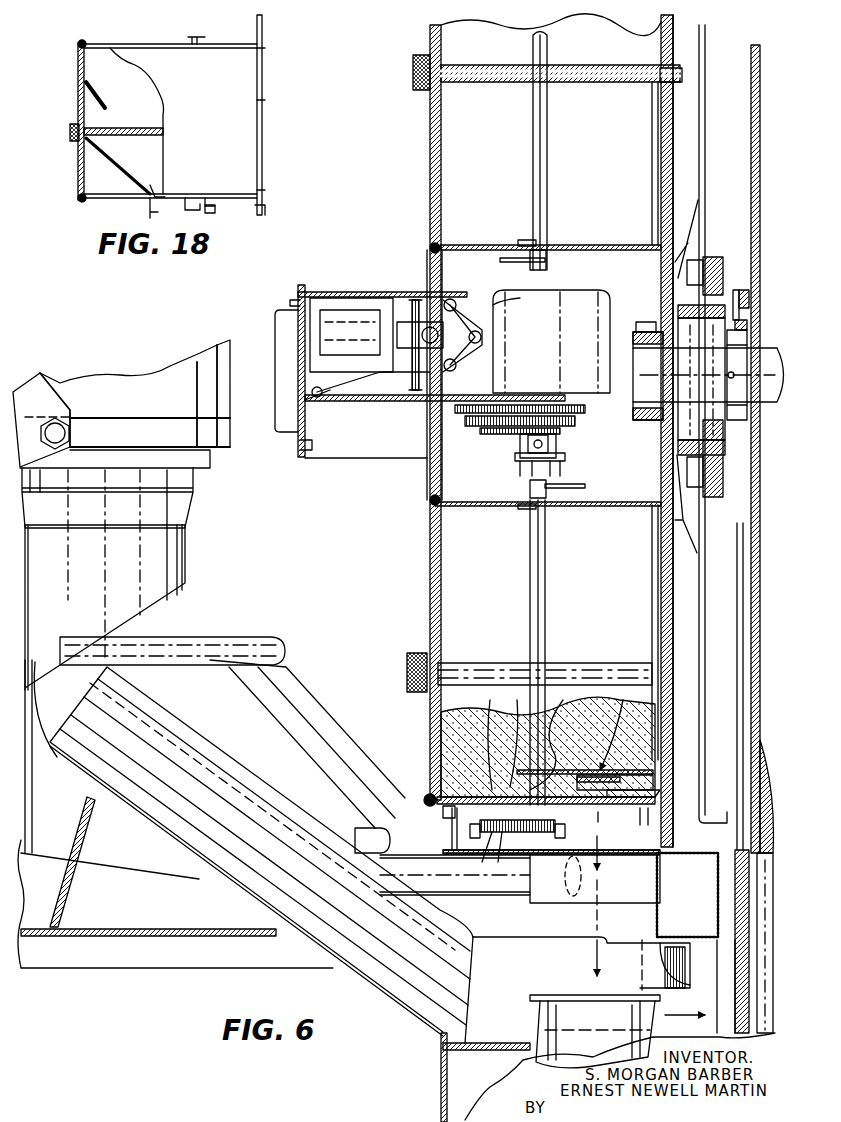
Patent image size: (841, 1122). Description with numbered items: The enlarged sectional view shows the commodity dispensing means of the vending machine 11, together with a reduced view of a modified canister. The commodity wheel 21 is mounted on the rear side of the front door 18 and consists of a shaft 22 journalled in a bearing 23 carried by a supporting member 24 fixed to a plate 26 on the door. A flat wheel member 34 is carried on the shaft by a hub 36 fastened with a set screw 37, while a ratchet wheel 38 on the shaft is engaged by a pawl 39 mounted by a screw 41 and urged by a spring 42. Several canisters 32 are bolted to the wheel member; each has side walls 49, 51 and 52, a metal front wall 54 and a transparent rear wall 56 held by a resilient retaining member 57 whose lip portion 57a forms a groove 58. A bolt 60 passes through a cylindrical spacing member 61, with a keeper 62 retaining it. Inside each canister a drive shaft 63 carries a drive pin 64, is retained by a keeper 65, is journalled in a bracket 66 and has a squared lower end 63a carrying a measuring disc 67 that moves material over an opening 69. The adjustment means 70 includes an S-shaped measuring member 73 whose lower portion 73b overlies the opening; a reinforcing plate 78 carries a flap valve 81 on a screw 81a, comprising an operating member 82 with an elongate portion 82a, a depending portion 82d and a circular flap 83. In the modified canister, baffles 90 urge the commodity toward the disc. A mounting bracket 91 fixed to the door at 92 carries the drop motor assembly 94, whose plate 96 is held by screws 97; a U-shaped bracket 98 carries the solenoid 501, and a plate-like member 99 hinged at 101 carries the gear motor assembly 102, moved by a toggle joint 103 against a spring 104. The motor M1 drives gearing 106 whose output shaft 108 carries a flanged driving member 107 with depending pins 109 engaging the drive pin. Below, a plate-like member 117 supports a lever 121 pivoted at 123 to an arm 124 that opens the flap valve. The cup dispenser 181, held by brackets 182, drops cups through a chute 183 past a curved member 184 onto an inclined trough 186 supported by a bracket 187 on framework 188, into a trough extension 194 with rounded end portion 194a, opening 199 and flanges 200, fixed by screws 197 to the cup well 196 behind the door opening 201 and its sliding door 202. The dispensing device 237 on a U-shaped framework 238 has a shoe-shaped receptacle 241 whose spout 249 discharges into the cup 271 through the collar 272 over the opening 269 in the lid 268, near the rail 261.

In FIG. 6, the apparatus 11 is at (778, 75).
In FIG. 6, the front door 18 is at (762, 162).
In FIG. 6, the commodity wheel 21 is at (428, 148).
In FIG. 6, the shaft 22 is at (770, 357).
In FIG. 6, the bearing 23 is at (701, 380).
In FIG. 6, the supporting member 24 is at (728, 432).
In FIG. 6, the plate 26 is at (707, 162).
In FIG. 18, the canister 32 is at (170, 122).
In FIG. 18, the wheel member 34 is at (262, 122).
In FIG. 6, the wheel member 34 is at (675, 118).
In FIG. 6, the hub 36 is at (646, 420).
In FIG. 6, the set screw 37 is at (660, 330).
In FIG. 6, the ratchet wheel 38 is at (748, 410).
In FIG. 6, the pawl 39 is at (748, 325).
In FIG. 6, the screw 41 is at (742, 300).
In FIG. 6, the spring 42 is at (740, 290).
In FIG. 6, the side wall 49 is at (615, 245).
In FIG. 6, the side wall 51 is at (545, 162).
In FIG. 6, the side wall 52 is at (443, 826).
In FIG. 6, the front wall 54 is at (660, 167).
In FIG. 18, the rear wall 56 is at (78, 98).
In FIG. 6, the rear wall 56 is at (430, 178).
In FIG. 18, the retaining member 57 is at (78, 200).
In FIG. 6, the retaining member 57 is at (430, 250).
In FIG. 6, the lip portion 57a is at (428, 790).
In FIG. 6, the groove 58 is at (424, 800).
In FIG. 18, the bolt 60 is at (70, 134).
In FIG. 6, the bolt 60 is at (413, 72).
In FIG. 18, the cylindrical spacing member 61 is at (150, 120).
In FIG. 6, the cylindrical spacing member 61 is at (525, 65).
In FIG. 6, the keeper 62 is at (662, 64).
In FIG. 6, the drive shaft 63 is at (547, 204).
In FIG. 6, the squared lower end 63a is at (511, 738).
In FIG. 6, the drive pin 64 is at (505, 262).
In FIG. 6, the keeper 65 is at (525, 240).
In FIG. 6, the bracket 66 is at (549, 737).
In FIG. 18, the measuring disc 67 is at (153, 192).
In FIG. 6, the measuring disc 67 is at (480, 740).
In FIG. 6, the opening 69 is at (604, 822).
In FIG. 6, the adjustment means 70 is at (623, 700).
In FIG. 6, the S-shaped measuring member 73 is at (653, 780).
In FIG. 6, the lower portion 73b is at (620, 790).
In FIG. 6, the reinforcing plate 78 is at (650, 806).
In FIG. 18, the flap valve 81 is at (213, 214).
In FIG. 6, the flap valve 81 is at (602, 860).
In FIG. 6, the screw 81a is at (565, 862).
In FIG. 6, the operating member 82 is at (478, 838).
In FIG. 6, the elongate portion 82a is at (565, 832).
In FIG. 6, the depending portion 82d is at (452, 840).
In FIG. 6, the circular flap 83 is at (645, 825).
In FIG. 18, the baffles 90 is at (92, 92).
In FIG. 6, the mounting bracket 91 is at (362, 458).
In FIG. 6, the end fixing point 92 is at (695, 512).
In FIG. 6, the drop motor assembly 94 is at (372, 270).
In FIG. 6, the plate 96 is at (305, 425).
In FIG. 6, the screws 97 is at (298, 300).
In FIG. 6, the U-shaped bracket 98 is at (411, 300).
In FIG. 6, the plate-like member 99 is at (380, 400).
In FIG. 6, the hinge 101 is at (325, 390).
In FIG. 6, the gear motor assembly 102 is at (610, 296).
In FIG. 6, the toggle joint 103 is at (485, 318).
In FIG. 6, the spring 104 is at (420, 335).
In FIG. 6, the gearing 106 is at (580, 408).
In FIG. 6, the flanged driving member 107 is at (560, 437).
In FIG. 6, the output shaft 108 is at (520, 444).
In FIG. 6, the depending pins 109 is at (525, 470).
In FIG. 6, the plate-like member 117 is at (508, 830).
In FIG. 6, the lever 121 is at (482, 855).
In FIG. 6, the pivot 123 is at (500, 856).
In FIG. 6, the arm 124 is at (570, 882).
In FIG. 6, the cup dispenser 181 is at (125, 385).
In FIG. 6, the brackets 182 is at (72, 404).
In FIG. 6, the chute 183 is at (184, 548).
In FIG. 6, the curved member 184 is at (50, 720).
In FIG. 6, the inclined trough 186 is at (192, 885).
In FIG. 6, the bracket 187 is at (68, 891).
In FIG. 6, the framework 188 is at (128, 965).
In FIG. 6, the trough extension 194 is at (530, 1036).
In FIG. 6, the rounded end portion 194a is at (668, 960).
In FIG. 6, the cup well 196 is at (443, 1093).
In FIG. 6, the screws 197 is at (540, 930).
In FIG. 6, the opening 199 is at (540, 1014).
In FIG. 6, the flanges 200 is at (580, 995).
In FIG. 6, the opening 201 is at (752, 910).
In FIG. 6, the sliding door 202 is at (717, 985).
In FIG. 6, the dispensing device 237 is at (318, 750).
In FIG. 6, the U-shaped framework 238 is at (136, 864).
In FIG. 6, the shoe-shaped receptacle 241 is at (292, 710).
In FIG. 6, the spout 249 is at (595, 885).
In FIG. 6, the rail 261 is at (200, 637).
In FIG. 6, the lid 268 is at (690, 853).
In FIG. 6, the opening 269 is at (660, 858).
In FIG. 6, the cup 271 is at (595, 1034).
In FIG. 6, the collar 272 is at (648, 908).
In FIG. 6, the solenoid 501 is at (345, 310).
In FIG. 6, the motor M1 is at (532, 344).